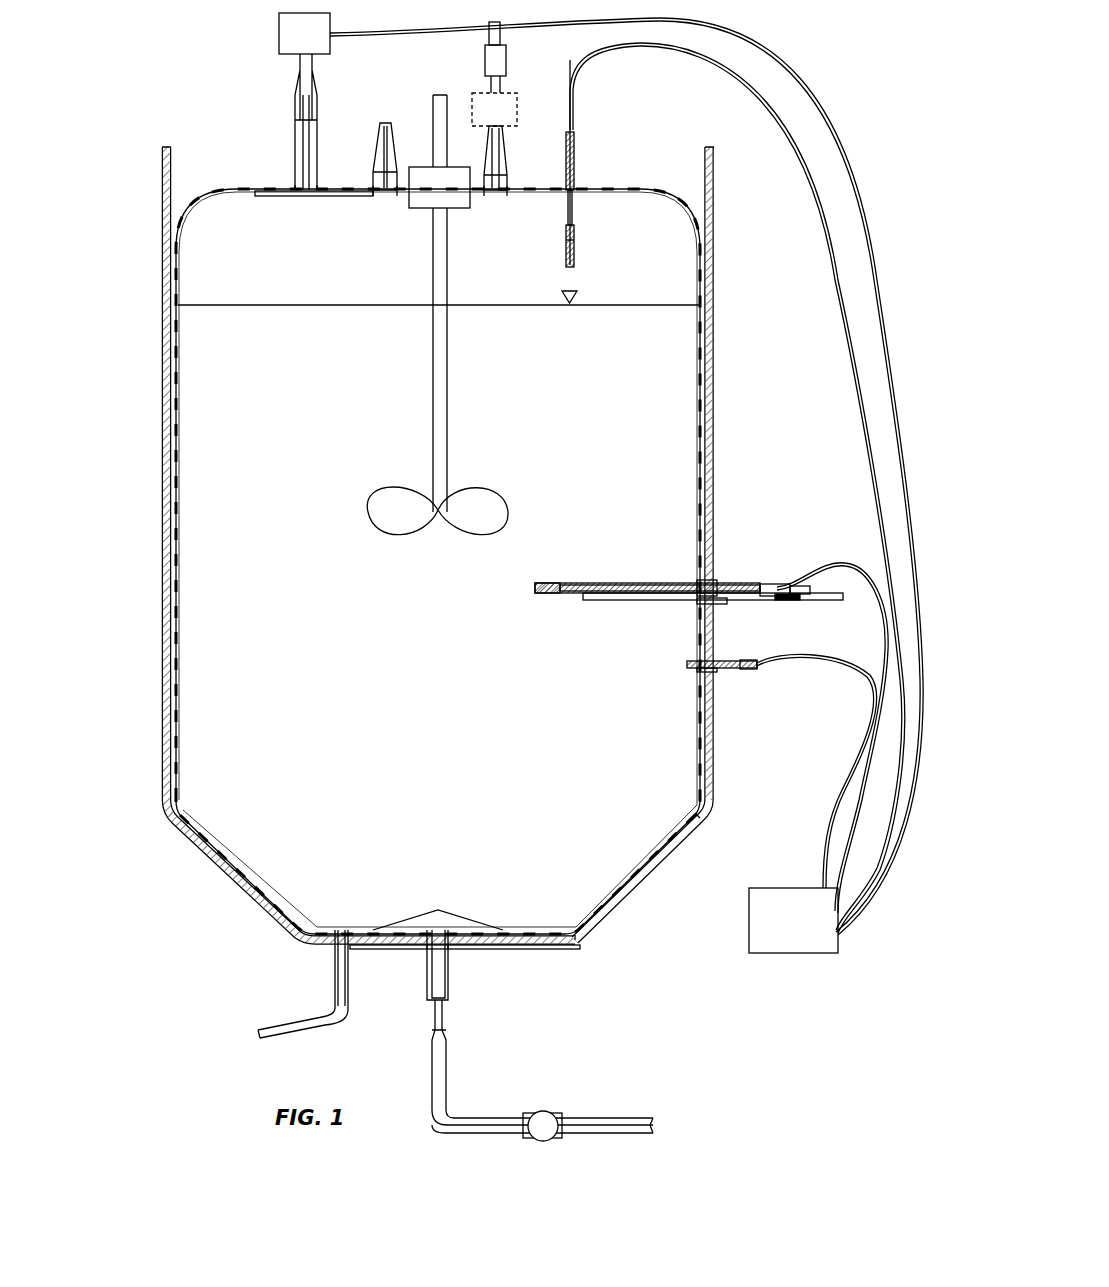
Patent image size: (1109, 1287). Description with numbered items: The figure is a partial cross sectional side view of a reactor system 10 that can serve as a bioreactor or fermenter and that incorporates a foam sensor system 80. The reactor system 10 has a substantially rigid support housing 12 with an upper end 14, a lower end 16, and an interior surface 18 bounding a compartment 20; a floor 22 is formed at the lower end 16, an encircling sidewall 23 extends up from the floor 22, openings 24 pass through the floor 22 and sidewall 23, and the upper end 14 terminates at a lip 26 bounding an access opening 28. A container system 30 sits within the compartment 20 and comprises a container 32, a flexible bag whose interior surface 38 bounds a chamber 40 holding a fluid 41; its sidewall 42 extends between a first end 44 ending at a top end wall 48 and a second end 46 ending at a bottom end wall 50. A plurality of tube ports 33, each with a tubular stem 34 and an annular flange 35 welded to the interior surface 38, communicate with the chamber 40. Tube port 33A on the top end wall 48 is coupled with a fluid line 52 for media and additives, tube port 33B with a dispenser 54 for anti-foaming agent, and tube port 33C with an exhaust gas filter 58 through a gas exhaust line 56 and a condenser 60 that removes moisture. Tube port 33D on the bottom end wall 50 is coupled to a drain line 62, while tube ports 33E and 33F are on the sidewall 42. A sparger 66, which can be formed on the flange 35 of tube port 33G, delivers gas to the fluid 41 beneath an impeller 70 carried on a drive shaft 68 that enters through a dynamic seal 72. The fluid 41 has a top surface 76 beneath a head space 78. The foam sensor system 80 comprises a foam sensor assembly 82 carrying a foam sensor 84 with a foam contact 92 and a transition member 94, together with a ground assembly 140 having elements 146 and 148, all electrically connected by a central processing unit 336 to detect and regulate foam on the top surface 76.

The reactor system 10 is at (838, 78).
The support housing 12 is at (710, 385).
The upper end 14 is at (724, 247).
The lower end 16 is at (703, 860).
The interior surface 18 is at (704, 155).
The compartment 20 is at (707, 213).
The floor 22 is at (560, 946).
The sidewall 23 is at (708, 725).
The openings 24 is at (427, 960).
The lip 26 is at (166, 147).
The access opening 28 is at (185, 178).
The container system 30 is at (638, 188).
The container 32 is at (706, 428).
The tube ports 33 is at (720, 601).
The tube port 33A is at (372, 193).
The tube port 33B is at (318, 147).
The tube port 33C is at (505, 193).
The tube port 33D is at (330, 932).
The tube port 33E is at (700, 575).
The tube port 33F is at (697, 675).
The tube port 33G is at (450, 997).
The tubular stem 34 is at (295, 158).
The annular flange 35 is at (264, 192).
The interior surface 38 is at (700, 478).
The chamber 40 is at (615, 519).
The fluid 41 is at (705, 346).
The sidewall 42 is at (707, 515).
The first end 44 is at (685, 262).
The second end 46 is at (690, 820).
The top end wall 48 is at (610, 188).
The bottom end wall 50 is at (535, 932).
The fluid line 52 is at (392, 133).
The dispenser 54 is at (279, 30).
The gas exhaust line 56 is at (506, 140).
The exhaust gas filter 58 is at (506, 58).
The condenser 60 is at (478, 93).
The drain line 62 is at (300, 1020).
The sparger 66 is at (440, 910).
The drive shaft 68 is at (432, 387).
The impeller 70 is at (383, 533).
The dynamic seal 72 is at (455, 208).
The top surface 76 is at (280, 303).
The head space 78 is at (188, 270).
The foam sensor system 80 is at (893, 253).
The foam sensor assembly 82 is at (588, 152).
The foam sensor 84 is at (568, 266).
The foam contact 92 is at (575, 237).
The transition member 94 is at (573, 208).
The ground assembly 140 is at (606, 617).
The sensor tip 146 is at (540, 597).
The sensor housing 148 is at (597, 583).
The central processing unit 336 is at (790, 953).